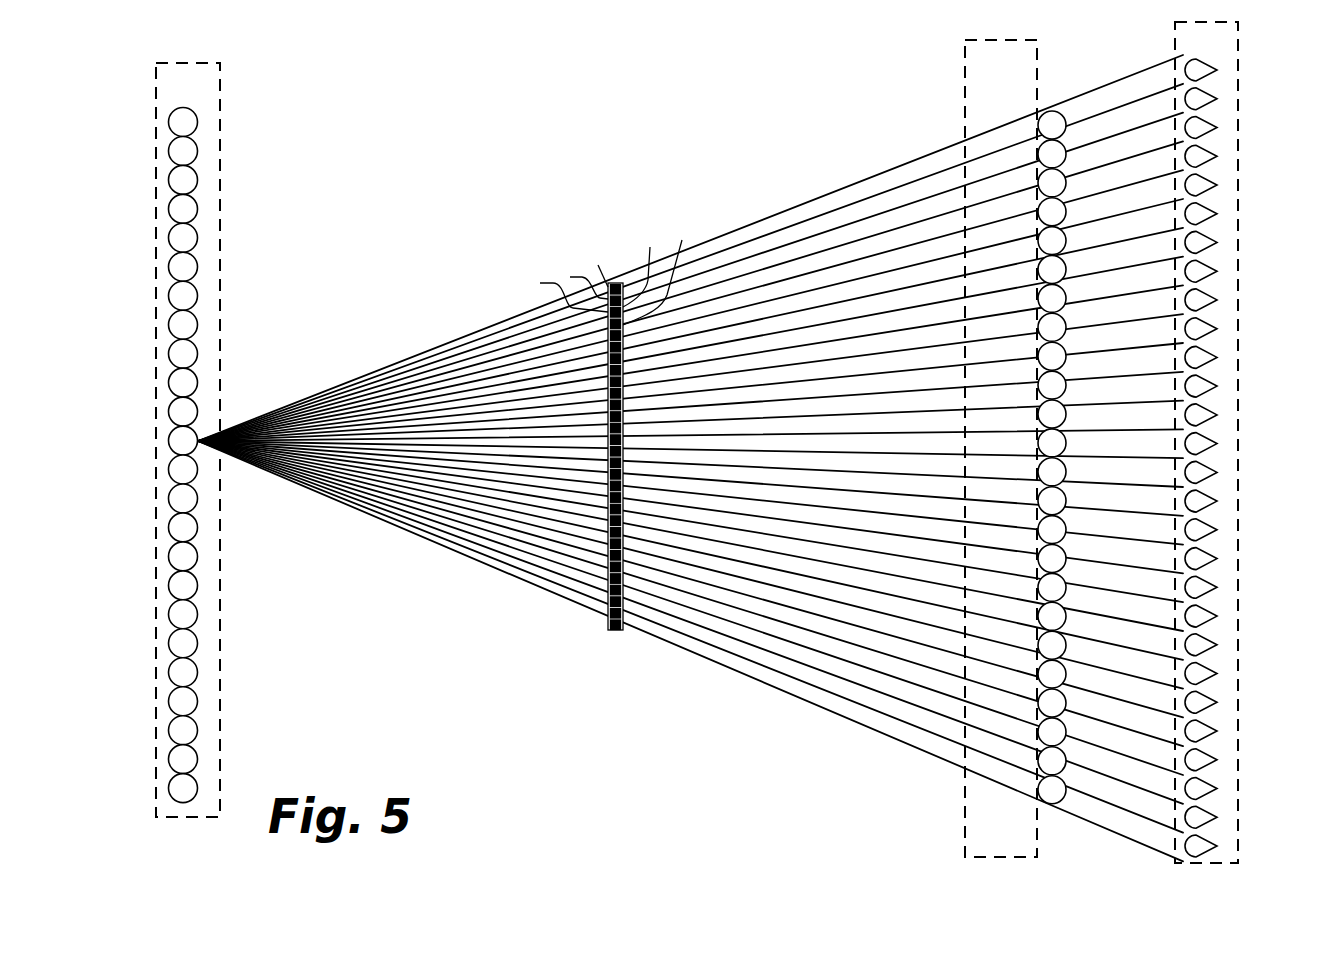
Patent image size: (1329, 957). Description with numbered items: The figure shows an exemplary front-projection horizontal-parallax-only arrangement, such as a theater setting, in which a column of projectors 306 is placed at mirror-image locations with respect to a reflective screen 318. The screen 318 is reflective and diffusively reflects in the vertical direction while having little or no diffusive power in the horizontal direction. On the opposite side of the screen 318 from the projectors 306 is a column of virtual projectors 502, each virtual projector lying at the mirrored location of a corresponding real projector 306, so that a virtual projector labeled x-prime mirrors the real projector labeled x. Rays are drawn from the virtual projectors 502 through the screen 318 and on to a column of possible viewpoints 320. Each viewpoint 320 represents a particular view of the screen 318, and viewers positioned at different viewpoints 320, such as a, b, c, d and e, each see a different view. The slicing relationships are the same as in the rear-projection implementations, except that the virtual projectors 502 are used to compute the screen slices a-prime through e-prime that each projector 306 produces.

The virtual projectors 502 is at (188, 466).
The projectors 306 is at (1036, 448).
The reflective screen 318 is at (612, 630).
The viewpoints 320 is at (1198, 456).